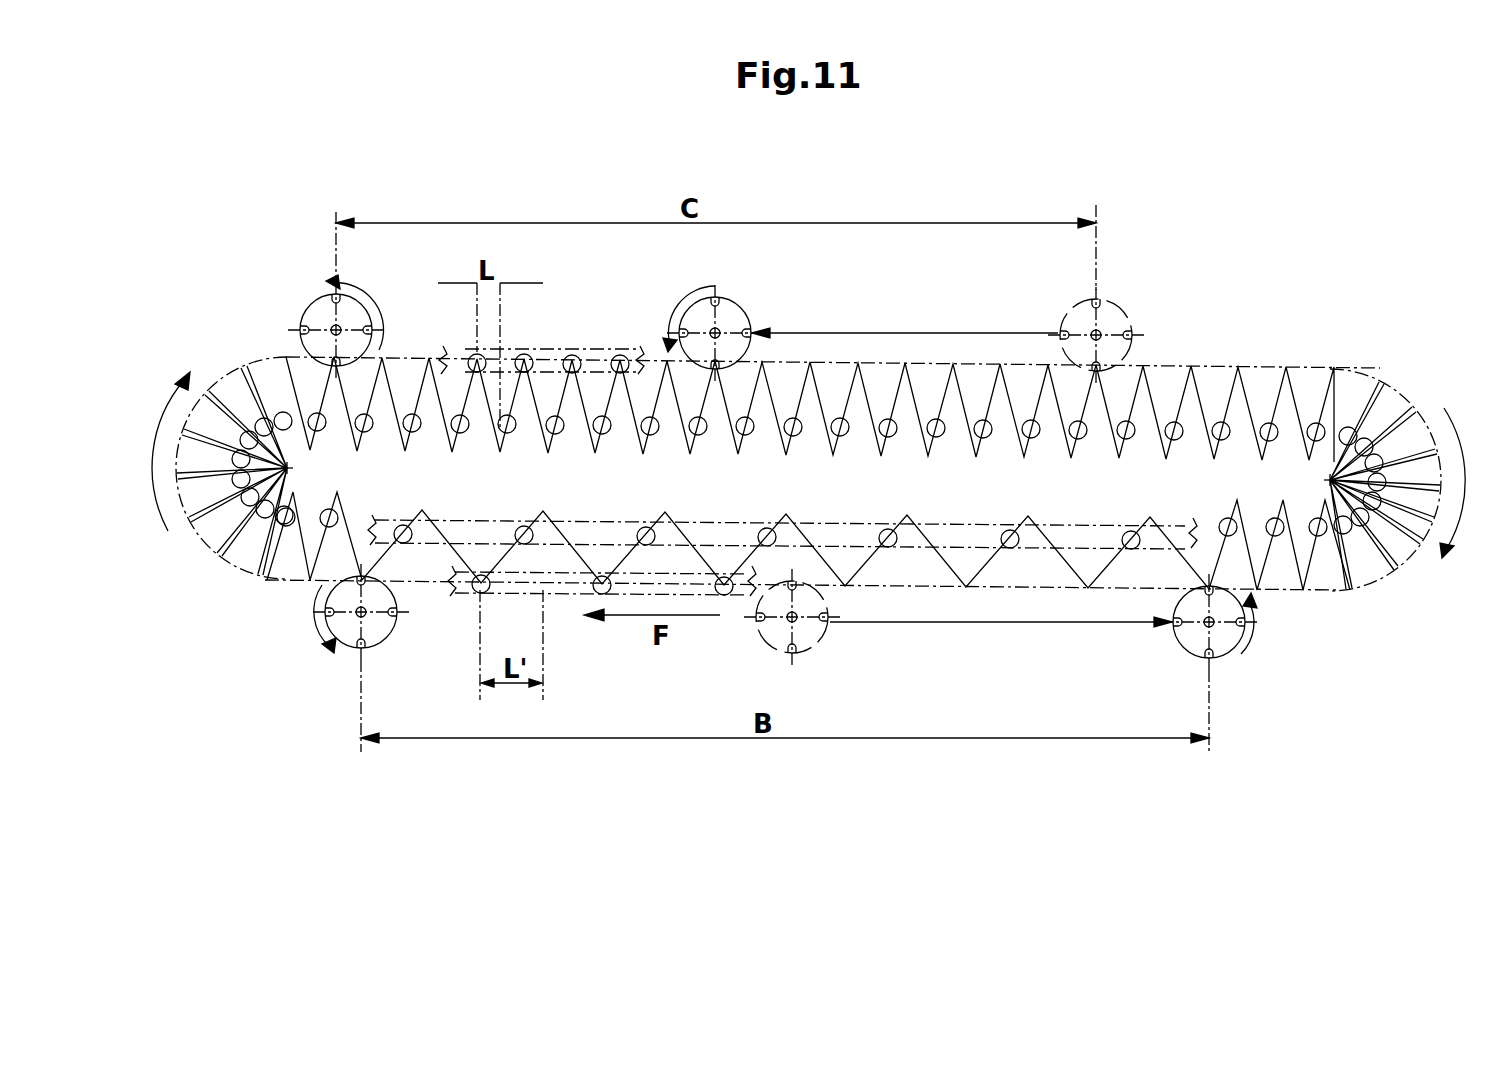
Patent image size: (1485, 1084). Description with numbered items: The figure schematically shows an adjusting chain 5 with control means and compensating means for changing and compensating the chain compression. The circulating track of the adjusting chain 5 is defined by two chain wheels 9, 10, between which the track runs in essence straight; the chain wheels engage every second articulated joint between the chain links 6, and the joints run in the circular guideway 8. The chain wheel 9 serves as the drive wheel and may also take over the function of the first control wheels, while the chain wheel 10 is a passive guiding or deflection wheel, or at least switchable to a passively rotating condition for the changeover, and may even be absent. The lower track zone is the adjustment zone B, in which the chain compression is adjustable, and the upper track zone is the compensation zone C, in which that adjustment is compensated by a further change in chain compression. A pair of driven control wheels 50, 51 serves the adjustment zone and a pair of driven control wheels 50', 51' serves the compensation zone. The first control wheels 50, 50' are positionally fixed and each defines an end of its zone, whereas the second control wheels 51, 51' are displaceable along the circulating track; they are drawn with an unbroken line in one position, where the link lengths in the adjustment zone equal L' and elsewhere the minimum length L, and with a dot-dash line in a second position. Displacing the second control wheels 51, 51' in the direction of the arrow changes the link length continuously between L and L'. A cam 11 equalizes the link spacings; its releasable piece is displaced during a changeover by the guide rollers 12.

The adjusting chain 5 is at (1352, 364).
The chain links 6 is at (1300, 393).
The guideway 8 is at (455, 346).
The chain wheel 9 is at (215, 545).
The chain wheel 10 is at (1395, 400).
The cam 11 is at (710, 520).
The guide rollers 12 is at (1212, 400).
The first control wheel 50 is at (348, 658).
The first control wheel 50' is at (309, 295).
The second control wheel 51 is at (1000, 660).
The second control wheel 51' is at (937, 294).